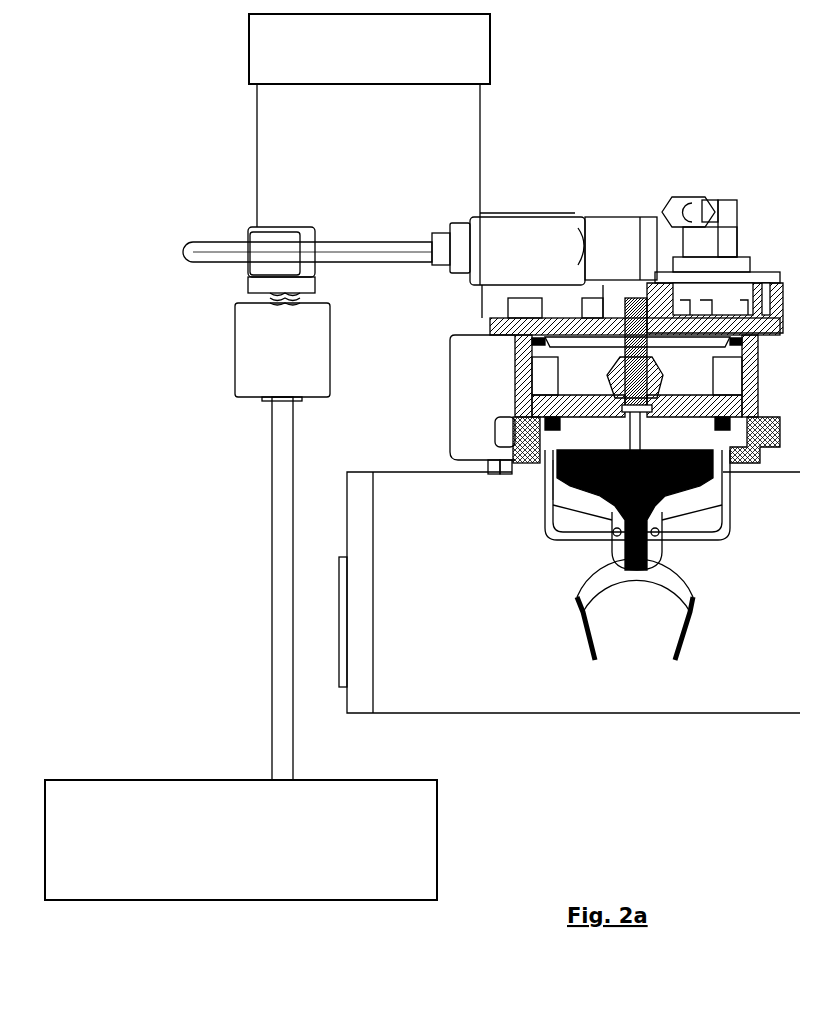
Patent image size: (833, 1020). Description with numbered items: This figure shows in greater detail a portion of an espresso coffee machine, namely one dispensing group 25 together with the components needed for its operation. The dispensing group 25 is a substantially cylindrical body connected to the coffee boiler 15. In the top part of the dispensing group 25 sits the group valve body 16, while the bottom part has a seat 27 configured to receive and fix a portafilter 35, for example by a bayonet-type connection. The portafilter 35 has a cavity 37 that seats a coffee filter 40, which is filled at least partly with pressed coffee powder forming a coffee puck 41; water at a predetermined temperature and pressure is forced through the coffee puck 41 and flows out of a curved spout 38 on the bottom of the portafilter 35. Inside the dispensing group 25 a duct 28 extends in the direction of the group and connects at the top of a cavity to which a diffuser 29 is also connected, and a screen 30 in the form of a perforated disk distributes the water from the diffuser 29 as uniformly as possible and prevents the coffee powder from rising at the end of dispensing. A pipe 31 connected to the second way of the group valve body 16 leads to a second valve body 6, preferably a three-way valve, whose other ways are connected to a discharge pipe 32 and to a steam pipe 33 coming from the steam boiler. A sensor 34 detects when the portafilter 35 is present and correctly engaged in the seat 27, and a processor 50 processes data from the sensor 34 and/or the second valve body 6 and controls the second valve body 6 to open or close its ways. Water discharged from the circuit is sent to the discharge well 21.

The processor 50 is at (492, 50).
The second valve body 6 is at (303, 226).
The pipe 31 is at (372, 240).
The steam pipe 33 is at (374, 265).
The sensor 34 is at (450, 418).
The discharge pipe 32 is at (270, 556).
The discharge well 21 is at (167, 778).
The coffee boiler 15 is at (477, 695).
The group valve body 16 is at (605, 213).
The dispensing group 25 is at (760, 378).
The screen 30 is at (595, 430).
The duct 28 is at (657, 358).
The diffuser 29 is at (735, 436).
The seat 27 is at (512, 472).
The coffee filter 40 is at (725, 463).
The cavity 37 is at (693, 492).
The portafilter 35 is at (677, 520).
The coffee puck 41 is at (557, 482).
The curved spout 38 is at (697, 603).